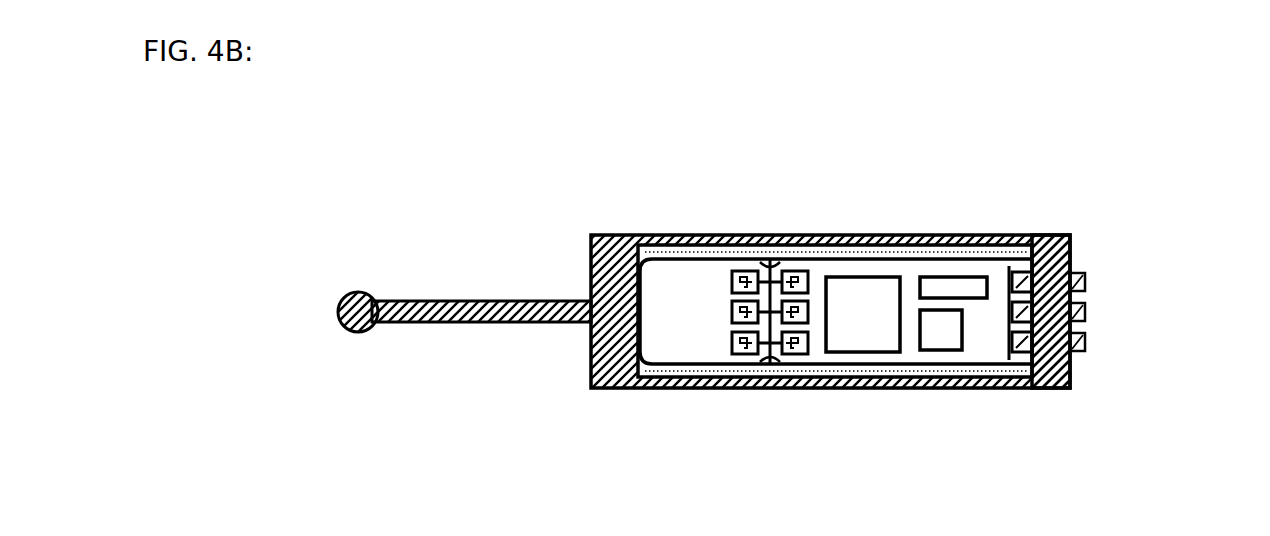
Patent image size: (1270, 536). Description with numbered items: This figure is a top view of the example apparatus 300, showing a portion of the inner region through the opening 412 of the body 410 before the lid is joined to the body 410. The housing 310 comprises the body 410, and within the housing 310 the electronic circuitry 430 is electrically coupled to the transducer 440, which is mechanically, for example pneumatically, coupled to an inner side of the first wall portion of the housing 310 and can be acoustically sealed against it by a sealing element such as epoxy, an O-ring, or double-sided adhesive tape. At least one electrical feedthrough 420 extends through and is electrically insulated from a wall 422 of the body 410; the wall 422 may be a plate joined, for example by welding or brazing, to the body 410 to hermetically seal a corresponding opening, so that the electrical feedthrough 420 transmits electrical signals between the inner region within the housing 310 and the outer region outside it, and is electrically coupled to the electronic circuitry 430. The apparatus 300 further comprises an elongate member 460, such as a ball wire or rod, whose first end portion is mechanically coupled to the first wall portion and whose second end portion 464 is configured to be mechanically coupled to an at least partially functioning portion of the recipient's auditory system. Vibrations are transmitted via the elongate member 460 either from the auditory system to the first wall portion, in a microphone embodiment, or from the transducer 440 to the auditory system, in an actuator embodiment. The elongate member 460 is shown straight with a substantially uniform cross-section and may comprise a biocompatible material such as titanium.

The apparatus 300 is at (607, 158).
The housing 310 is at (612, 236).
The body 410 is at (1050, 237).
The opening 412 is at (912, 283).
The electrical feedthrough 420 is at (1085, 272).
The wall 422 is at (1072, 372).
The electronic circuitry 430 is at (913, 352).
The transducer 440 is at (690, 352).
The elongate member 460 is at (502, 300).
The second end portion 464 is at (350, 296).